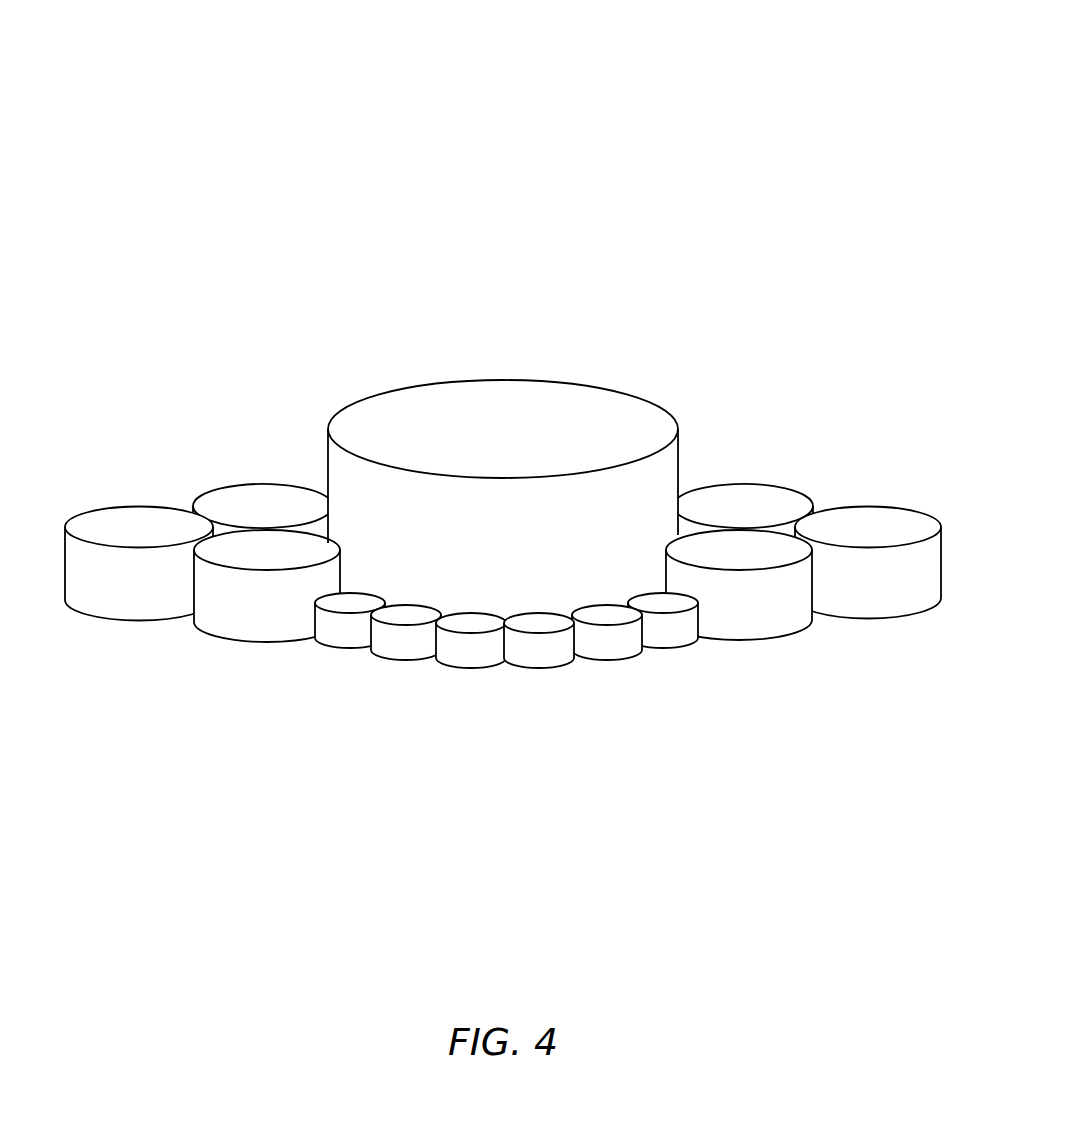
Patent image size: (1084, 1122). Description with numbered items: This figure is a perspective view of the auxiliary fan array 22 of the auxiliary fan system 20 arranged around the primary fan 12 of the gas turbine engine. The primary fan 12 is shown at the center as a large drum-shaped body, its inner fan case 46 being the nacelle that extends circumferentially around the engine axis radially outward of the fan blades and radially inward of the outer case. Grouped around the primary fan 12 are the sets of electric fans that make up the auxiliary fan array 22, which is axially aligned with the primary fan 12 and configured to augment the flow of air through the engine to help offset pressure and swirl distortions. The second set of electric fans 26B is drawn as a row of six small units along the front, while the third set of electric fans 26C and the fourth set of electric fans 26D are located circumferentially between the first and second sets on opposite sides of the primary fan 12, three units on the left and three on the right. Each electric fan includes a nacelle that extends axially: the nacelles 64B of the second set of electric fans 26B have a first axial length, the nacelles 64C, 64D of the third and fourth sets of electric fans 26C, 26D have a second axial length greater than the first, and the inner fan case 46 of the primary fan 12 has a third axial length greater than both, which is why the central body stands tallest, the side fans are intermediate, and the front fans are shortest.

The auxiliary fan system 20 is at (502, 424).
The auxiliary fan array 22 is at (502, 484).
The primary fan 12 is at (503, 409).
The inner fan case 46 is at (543, 380).
The second set of electric fans 26B is at (506, 705).
The third set of electric fans 26C is at (191, 445).
The fourth set of electric fans 26D is at (814, 500).
The nacelle 64B is at (475, 638).
The nacelle 64C is at (103, 508).
The nacelle 64D is at (742, 485).